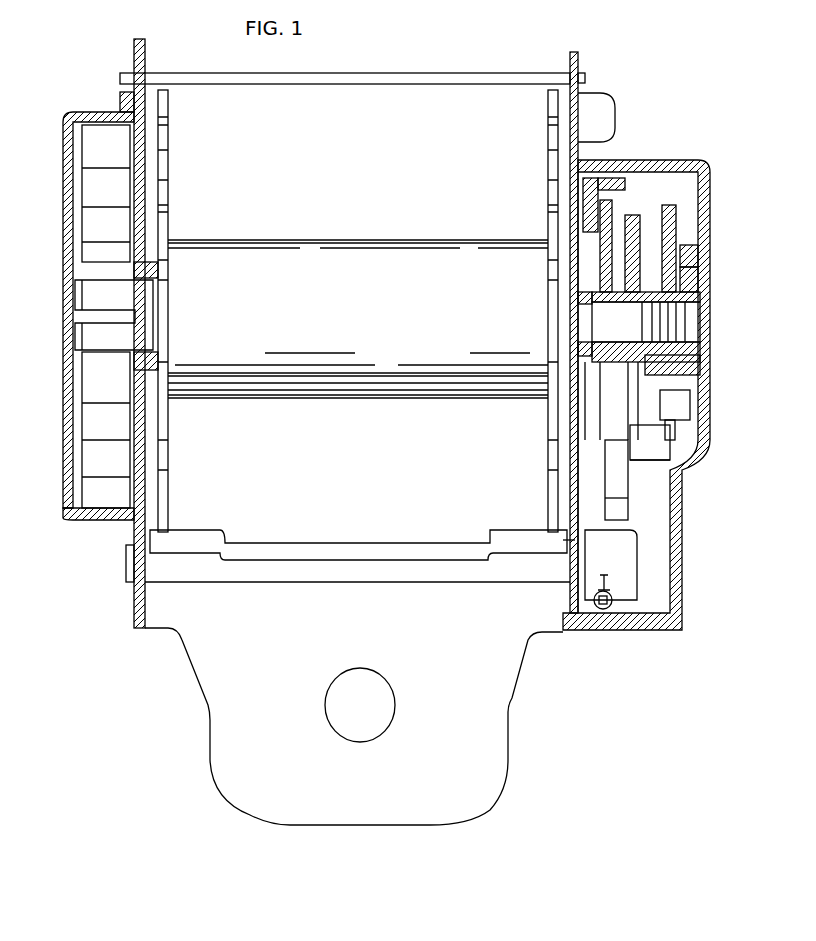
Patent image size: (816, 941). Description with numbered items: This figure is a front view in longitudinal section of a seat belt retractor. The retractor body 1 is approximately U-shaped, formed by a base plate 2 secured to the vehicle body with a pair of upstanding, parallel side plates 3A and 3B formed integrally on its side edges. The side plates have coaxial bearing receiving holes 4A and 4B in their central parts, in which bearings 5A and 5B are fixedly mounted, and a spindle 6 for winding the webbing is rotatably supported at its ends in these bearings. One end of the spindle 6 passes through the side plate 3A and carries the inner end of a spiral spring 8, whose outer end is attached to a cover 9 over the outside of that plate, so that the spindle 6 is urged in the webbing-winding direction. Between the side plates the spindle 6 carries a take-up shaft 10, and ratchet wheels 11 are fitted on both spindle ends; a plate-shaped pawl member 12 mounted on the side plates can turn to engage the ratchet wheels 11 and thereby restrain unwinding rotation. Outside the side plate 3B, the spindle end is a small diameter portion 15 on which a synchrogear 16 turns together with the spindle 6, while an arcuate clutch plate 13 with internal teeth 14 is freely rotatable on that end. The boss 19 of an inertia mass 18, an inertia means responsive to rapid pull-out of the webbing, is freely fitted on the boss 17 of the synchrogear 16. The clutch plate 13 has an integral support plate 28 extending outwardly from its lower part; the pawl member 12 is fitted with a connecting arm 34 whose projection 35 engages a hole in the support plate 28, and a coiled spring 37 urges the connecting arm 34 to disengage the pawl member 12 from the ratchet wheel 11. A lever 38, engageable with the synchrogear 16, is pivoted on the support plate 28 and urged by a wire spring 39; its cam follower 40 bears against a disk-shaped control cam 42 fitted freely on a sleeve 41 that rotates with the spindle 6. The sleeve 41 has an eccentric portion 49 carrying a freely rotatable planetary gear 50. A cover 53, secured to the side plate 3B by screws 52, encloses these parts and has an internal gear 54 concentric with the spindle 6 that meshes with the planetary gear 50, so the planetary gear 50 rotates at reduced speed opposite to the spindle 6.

The retractor body 1 is at (495, 734).
The base plate 2 is at (210, 688).
The side plate 3A is at (134, 105).
The side plate 3B is at (578, 58).
The bearing receiving hole 4A is at (150, 268).
The bearing receiving hole 4B is at (578, 298).
The bearing 5A is at (150, 362).
The bearing 5B is at (578, 352).
The spindle 6 is at (153, 322).
The spiral spring 8 is at (90, 192).
The cover 9 is at (68, 406).
The take-up shaft 10 is at (335, 258).
The ratchet wheel 11 is at (168, 163).
The pawl member 12 is at (375, 545).
The clutch plate 13 is at (605, 182).
The internal teeth 14 is at (620, 185).
The small diameter portion 15 is at (630, 326).
The synchrogear 16 is at (648, 203).
The boss 17 is at (600, 326).
The inertia mass 18 is at (590, 246).
The boss 19 is at (700, 286).
The support plate 28 is at (620, 506).
The connecting arm 34 is at (620, 548).
The projection 35 is at (590, 512).
The coiled spring 37 is at (613, 612).
The lever 38 is at (660, 452).
The wire spring 39 is at (650, 442).
The cam follower 40 is at (690, 402).
The sleeve 41 is at (700, 308).
The control cam 42 is at (690, 432).
The eccentric portion 49 is at (700, 362).
The planetary gear 50 is at (690, 272).
The screws 52 is at (605, 108).
The cover 53 is at (710, 200).
The internal gear 54 is at (690, 256).